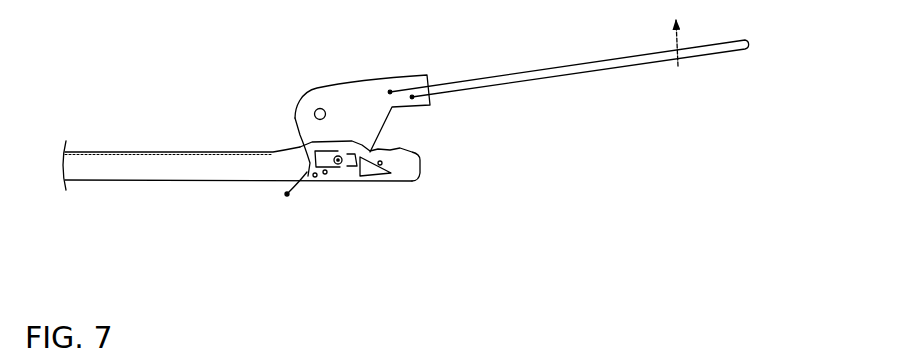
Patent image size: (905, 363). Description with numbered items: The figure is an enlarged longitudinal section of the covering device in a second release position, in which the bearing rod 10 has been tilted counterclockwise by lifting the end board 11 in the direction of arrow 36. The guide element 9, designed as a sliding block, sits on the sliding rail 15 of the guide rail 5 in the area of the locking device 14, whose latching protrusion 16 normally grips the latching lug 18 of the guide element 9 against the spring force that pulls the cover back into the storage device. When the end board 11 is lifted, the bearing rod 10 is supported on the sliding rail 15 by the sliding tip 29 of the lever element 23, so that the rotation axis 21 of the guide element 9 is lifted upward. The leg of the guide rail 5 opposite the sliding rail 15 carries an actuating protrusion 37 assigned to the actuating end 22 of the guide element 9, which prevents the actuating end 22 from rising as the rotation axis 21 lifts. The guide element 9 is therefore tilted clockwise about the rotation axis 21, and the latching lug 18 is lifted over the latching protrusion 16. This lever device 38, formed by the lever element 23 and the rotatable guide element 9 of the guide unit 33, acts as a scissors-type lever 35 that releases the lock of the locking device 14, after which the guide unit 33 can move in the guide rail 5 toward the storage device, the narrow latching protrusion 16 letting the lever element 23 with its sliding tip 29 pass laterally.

The guide rail 5 is at (128, 151).
The sliding rail 15 is at (178, 181).
The bearing rod 10 is at (320, 104).
The end board 11 is at (576, 69).
The arrow 36 is at (678, 69).
The lever device 38 is at (421, 160).
The guide unit 33 is at (292, 142).
The actuating protrusion 37 is at (381, 143).
The scissors-type lever 35 is at (405, 201).
The locking device 14 is at (350, 258).
The latching lug 18 is at (304, 158).
The latching protrusion 16 is at (303, 178).
The sliding tip 29 is at (315, 177).
The lever element 23 is at (326, 174).
The rotation axis 21 is at (339, 163).
The guide element 9 is at (360, 174).
The actuating end 22 is at (382, 164).